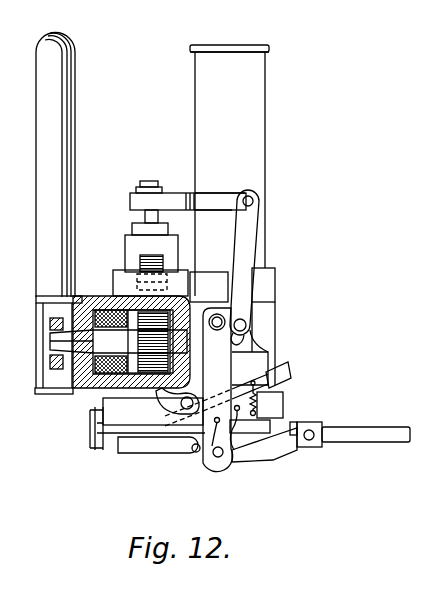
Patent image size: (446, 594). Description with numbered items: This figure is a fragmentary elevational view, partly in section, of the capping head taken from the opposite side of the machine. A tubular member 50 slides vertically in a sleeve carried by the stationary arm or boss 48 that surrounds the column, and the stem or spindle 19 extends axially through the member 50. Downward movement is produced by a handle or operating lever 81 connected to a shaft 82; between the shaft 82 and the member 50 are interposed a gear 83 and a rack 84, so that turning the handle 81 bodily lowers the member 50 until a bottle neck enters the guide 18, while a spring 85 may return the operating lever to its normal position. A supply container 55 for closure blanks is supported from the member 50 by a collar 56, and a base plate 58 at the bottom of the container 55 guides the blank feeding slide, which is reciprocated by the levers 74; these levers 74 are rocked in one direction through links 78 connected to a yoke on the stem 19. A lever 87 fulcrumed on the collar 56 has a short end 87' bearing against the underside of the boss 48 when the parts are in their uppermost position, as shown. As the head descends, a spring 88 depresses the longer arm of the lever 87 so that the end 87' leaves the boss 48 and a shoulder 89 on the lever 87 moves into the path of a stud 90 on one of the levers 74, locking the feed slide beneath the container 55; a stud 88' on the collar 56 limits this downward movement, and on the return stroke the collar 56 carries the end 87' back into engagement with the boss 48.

The handle or operating lever 81 is at (63, 148).
The stem or spindle 19 is at (148, 219).
The tubular member 50 is at (130, 241).
The rack 84 is at (163, 263).
The shaft 82 is at (85, 310).
The gear 83 is at (184, 306).
The arm or boss 48 is at (222, 301).
The links 78 is at (247, 245).
The supply hopper or container 55 is at (262, 330).
The levers 74 is at (268, 348).
The lever 87 is at (242, 385).
The shoulder 89 is at (290, 378).
The spring 88 is at (275, 407).
The stud 88' is at (263, 445).
The base plate 58 is at (350, 432).
The guide 18 is at (168, 448).
The collar 56 is at (113, 412).
The spring 85 is at (92, 390).
The end of lever 87' is at (150, 439).
The stud 90 is at (227, 398).